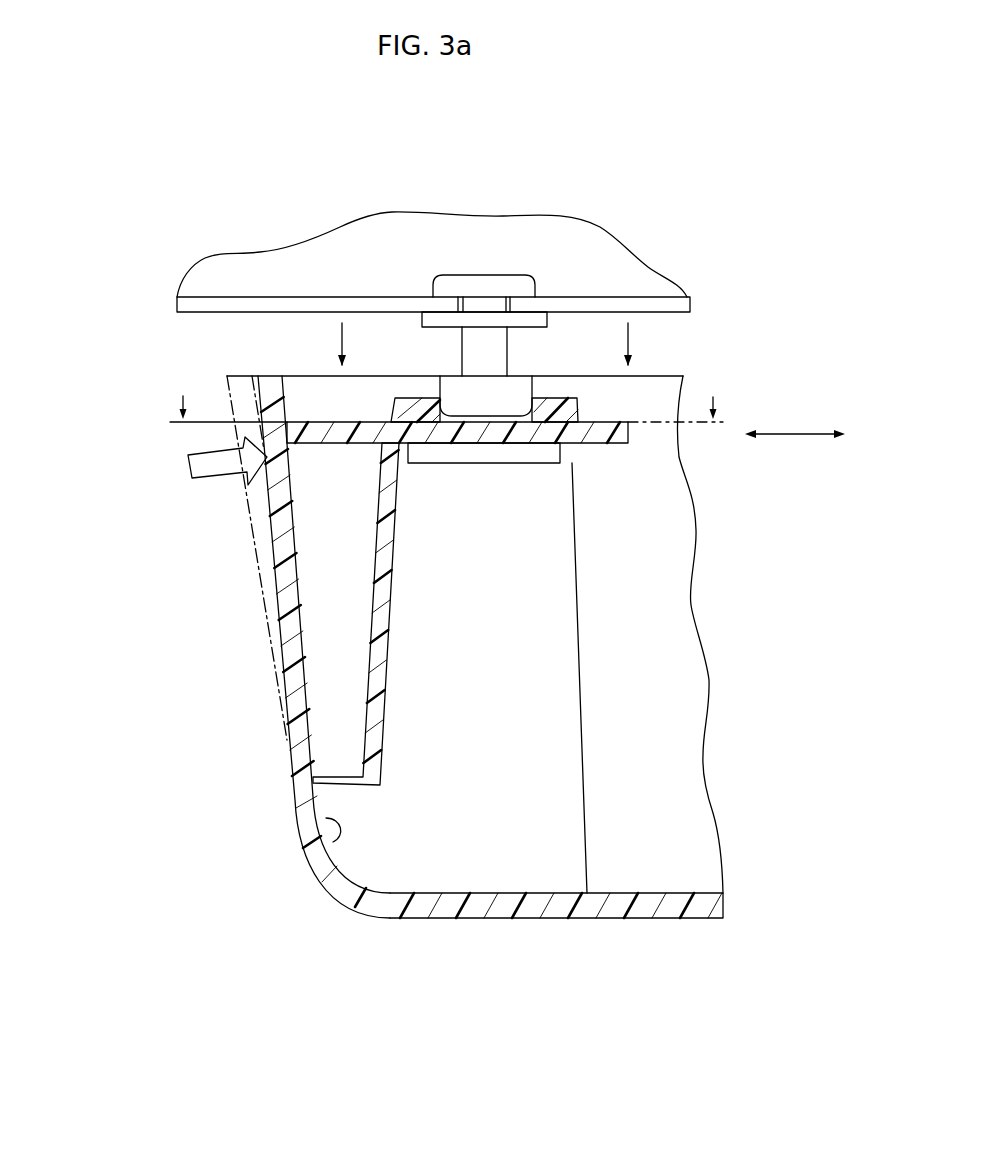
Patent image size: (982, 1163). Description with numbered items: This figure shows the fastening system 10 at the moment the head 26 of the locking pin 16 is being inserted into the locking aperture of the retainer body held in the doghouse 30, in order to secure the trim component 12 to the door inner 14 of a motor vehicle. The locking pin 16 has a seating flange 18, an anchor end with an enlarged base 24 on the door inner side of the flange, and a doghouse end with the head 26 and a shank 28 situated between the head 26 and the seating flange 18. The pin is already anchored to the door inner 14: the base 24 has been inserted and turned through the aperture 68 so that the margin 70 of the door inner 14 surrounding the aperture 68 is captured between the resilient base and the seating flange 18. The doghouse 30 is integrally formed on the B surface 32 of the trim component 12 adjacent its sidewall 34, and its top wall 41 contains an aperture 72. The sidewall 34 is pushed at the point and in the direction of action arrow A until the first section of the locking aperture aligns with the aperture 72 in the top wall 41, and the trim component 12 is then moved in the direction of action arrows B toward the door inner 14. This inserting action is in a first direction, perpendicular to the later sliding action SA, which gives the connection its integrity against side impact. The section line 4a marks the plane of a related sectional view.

The fastening system 10 is at (150, 297).
The trim component 12 is at (343, 897).
The door inner 14 is at (348, 297).
The locking pin 16 is at (526, 243).
The seating flange 18 is at (433, 317).
The base 24 is at (453, 282).
The head 26 is at (480, 398).
The shank 28 is at (493, 358).
The doghouse 30 is at (350, 671).
The B surface 32 is at (317, 860).
The sidewall 34 is at (287, 603).
The top wall 41 is at (577, 405).
The aperture 68 is at (463, 305).
The margin 70 is at (513, 305).
The aperture 72 is at (430, 410).
The action arrow A is at (210, 480).
The action arrows B is at (340, 340).
The sliding action SA is at (793, 433).
The section line 4a is at (451, 395).